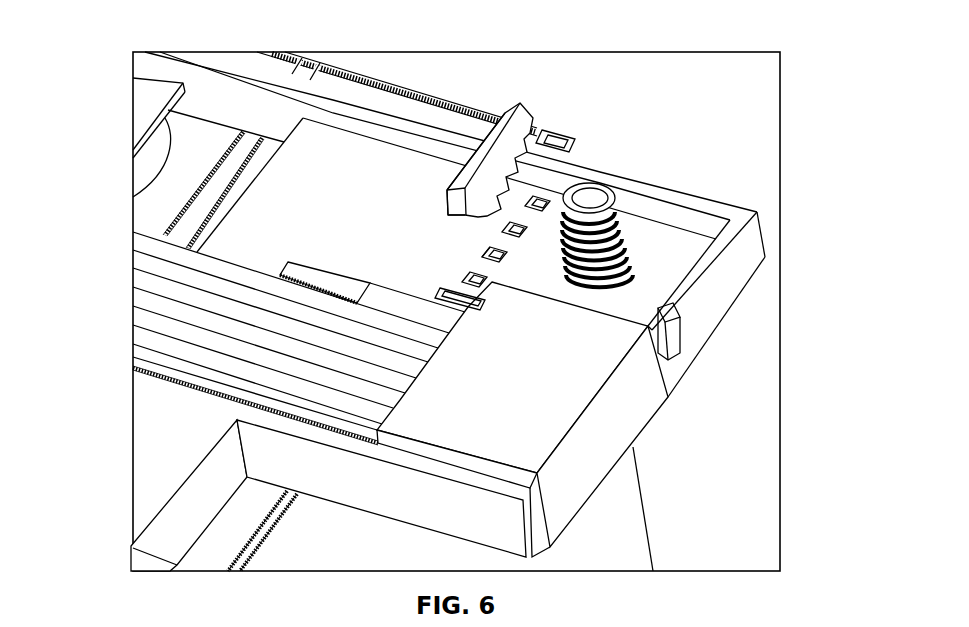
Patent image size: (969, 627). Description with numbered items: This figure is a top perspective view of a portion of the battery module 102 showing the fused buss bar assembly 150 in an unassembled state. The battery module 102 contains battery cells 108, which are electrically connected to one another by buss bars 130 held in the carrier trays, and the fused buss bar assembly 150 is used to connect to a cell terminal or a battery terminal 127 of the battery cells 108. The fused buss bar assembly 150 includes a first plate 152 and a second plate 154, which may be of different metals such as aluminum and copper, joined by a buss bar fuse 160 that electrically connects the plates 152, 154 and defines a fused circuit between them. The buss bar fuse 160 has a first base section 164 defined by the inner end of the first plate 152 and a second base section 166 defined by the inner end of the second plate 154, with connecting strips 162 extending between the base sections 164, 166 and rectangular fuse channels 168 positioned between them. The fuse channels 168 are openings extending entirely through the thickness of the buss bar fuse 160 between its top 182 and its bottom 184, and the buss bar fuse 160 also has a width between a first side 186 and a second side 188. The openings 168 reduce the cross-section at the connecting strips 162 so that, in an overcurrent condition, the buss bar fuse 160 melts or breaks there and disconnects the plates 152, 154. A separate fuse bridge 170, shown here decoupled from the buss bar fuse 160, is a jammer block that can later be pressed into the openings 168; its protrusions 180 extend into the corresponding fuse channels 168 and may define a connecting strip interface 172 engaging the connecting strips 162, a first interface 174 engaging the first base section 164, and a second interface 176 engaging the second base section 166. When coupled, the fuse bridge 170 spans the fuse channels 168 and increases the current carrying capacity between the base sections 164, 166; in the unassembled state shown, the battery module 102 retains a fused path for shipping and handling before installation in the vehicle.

The battery module 102 is at (751, 99).
The battery cells 108 is at (323, 80).
The battery terminal 127 is at (600, 242).
The buss bars 130 is at (150, 102).
The fused buss bar assembly 150 is at (503, 93).
The first plate 152 is at (380, 165).
The second plate 154 is at (688, 252).
The buss bar fuse 160 is at (548, 194).
The connecting strips 162 is at (530, 225).
The first base section 164 is at (534, 196).
The second base section 166 is at (537, 218).
The fuse channels 168 is at (545, 190).
The fuse bridge 170 is at (505, 162).
The connecting strip interface 172 is at (447, 193).
The first interface 174 is at (452, 160).
The second interface 176 is at (465, 214).
The protrusions 180 is at (481, 246).
The top 182 is at (660, 282).
The bottom 184 is at (655, 321).
The first side 186 is at (468, 306).
The second side 188 is at (622, 248).